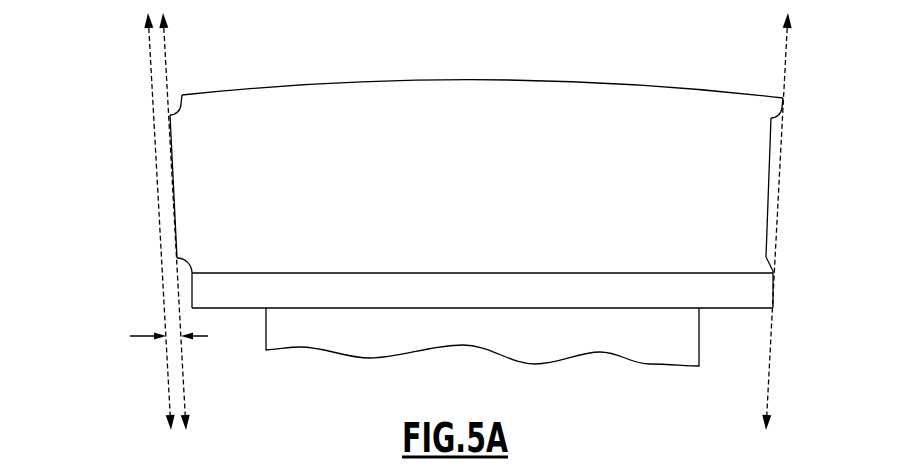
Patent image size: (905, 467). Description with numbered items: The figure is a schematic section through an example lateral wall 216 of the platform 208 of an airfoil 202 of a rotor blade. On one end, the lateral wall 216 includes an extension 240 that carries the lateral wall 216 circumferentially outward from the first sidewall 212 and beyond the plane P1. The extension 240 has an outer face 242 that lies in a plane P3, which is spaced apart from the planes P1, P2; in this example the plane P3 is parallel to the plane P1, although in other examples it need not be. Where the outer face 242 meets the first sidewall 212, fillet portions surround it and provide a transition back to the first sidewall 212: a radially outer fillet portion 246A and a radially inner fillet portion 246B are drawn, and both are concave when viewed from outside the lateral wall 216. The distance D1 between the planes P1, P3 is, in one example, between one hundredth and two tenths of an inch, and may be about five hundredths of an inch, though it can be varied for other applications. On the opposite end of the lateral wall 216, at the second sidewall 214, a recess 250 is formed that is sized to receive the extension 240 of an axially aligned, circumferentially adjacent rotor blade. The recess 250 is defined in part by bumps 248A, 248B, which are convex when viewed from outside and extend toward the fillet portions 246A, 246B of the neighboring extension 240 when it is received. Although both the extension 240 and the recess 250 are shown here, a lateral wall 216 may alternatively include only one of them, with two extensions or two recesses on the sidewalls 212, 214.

The airfoil 202 is at (660, 345).
The platform 208 is at (716, 300).
The first sidewall 212 is at (191, 287).
The second sidewall 214 is at (773, 295).
The lateral wall 216 is at (552, 92).
The extension 240 is at (178, 168).
The outer face 242 is at (158, 211).
The radially outer fillet portion 246A is at (173, 116).
The radially inner fillet portion 246B is at (180, 257).
The bump 248A is at (781, 100).
The bump 248B is at (775, 264).
The recess 250 is at (785, 184).
The plane P1 is at (167, 62).
The plane P2 is at (787, 53).
The plane P3 is at (149, 50).
The distance D1 is at (150, 337).